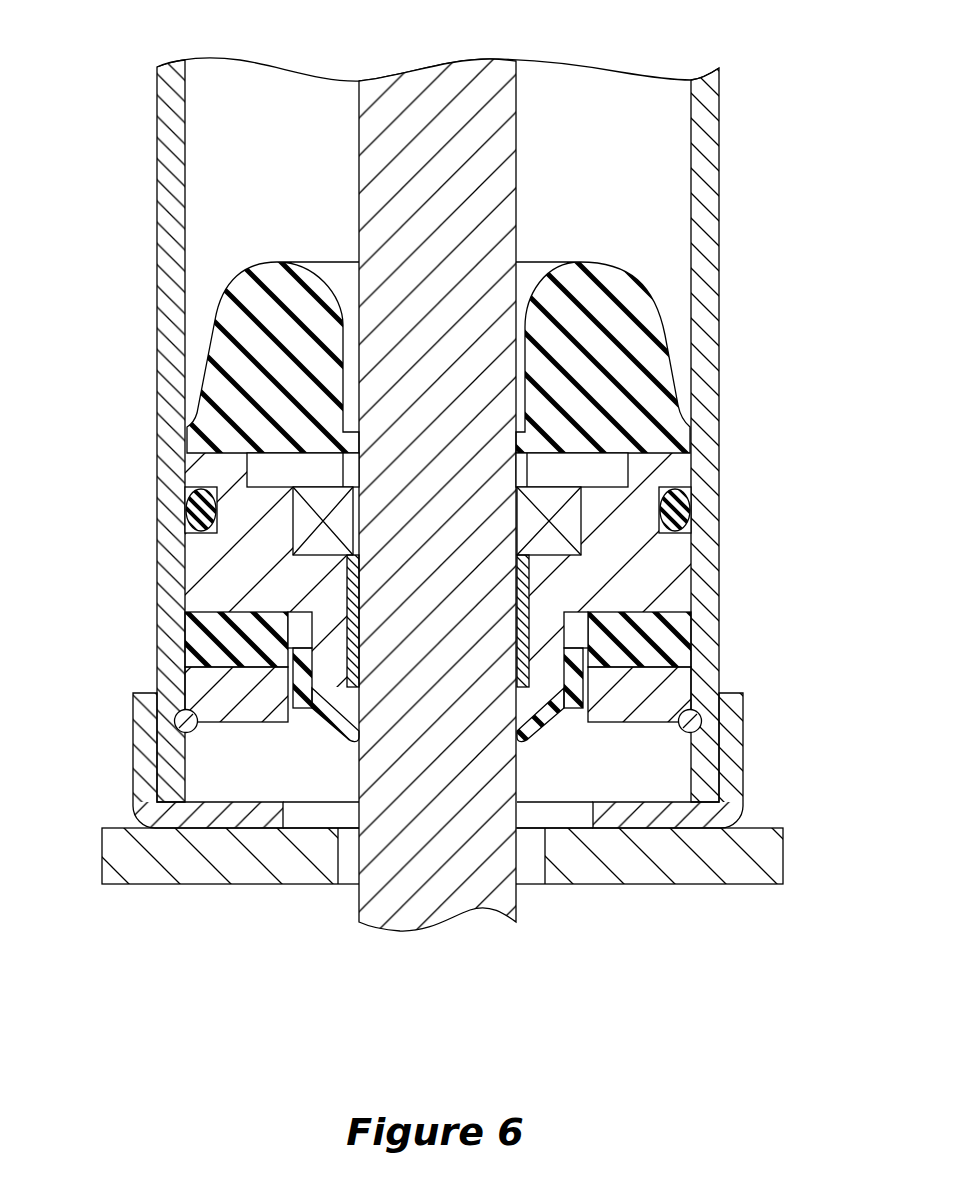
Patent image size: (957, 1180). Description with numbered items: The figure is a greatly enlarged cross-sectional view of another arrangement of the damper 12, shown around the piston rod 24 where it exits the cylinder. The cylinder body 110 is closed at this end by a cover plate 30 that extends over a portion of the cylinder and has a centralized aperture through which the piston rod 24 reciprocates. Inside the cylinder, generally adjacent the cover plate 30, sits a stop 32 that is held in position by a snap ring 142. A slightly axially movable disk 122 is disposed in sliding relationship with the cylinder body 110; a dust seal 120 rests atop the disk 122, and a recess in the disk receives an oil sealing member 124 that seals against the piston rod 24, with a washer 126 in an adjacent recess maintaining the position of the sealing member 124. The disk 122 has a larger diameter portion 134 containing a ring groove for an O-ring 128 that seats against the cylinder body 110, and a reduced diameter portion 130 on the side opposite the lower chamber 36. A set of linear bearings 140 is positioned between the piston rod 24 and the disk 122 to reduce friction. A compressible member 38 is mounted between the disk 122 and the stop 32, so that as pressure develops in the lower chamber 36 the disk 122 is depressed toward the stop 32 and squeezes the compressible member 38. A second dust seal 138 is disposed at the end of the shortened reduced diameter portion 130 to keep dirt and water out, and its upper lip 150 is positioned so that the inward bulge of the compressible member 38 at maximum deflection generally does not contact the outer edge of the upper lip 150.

The damper 12 is at (482, 427).
The piston rod 24 is at (517, 137).
The cover plate 30 is at (133, 739).
The stop 32 is at (245, 715).
The lower chamber 36 is at (567, 192).
The compressible member 38 is at (200, 652).
The cylinder body 110 is at (707, 112).
The dust seal 120 is at (653, 300).
The disk 122 is at (232, 568).
The oil sealing member 124 is at (325, 495).
The washer 126 is at (612, 472).
The O-ring 128 is at (686, 516).
The reduced diameter portion 130 is at (548, 675).
The larger diameter portion 134 is at (667, 584).
The dust seal 138 is at (318, 708).
The linear bearings 140 is at (527, 668).
The snap ring 142 is at (705, 724).
The upper lip 150 is at (308, 650).